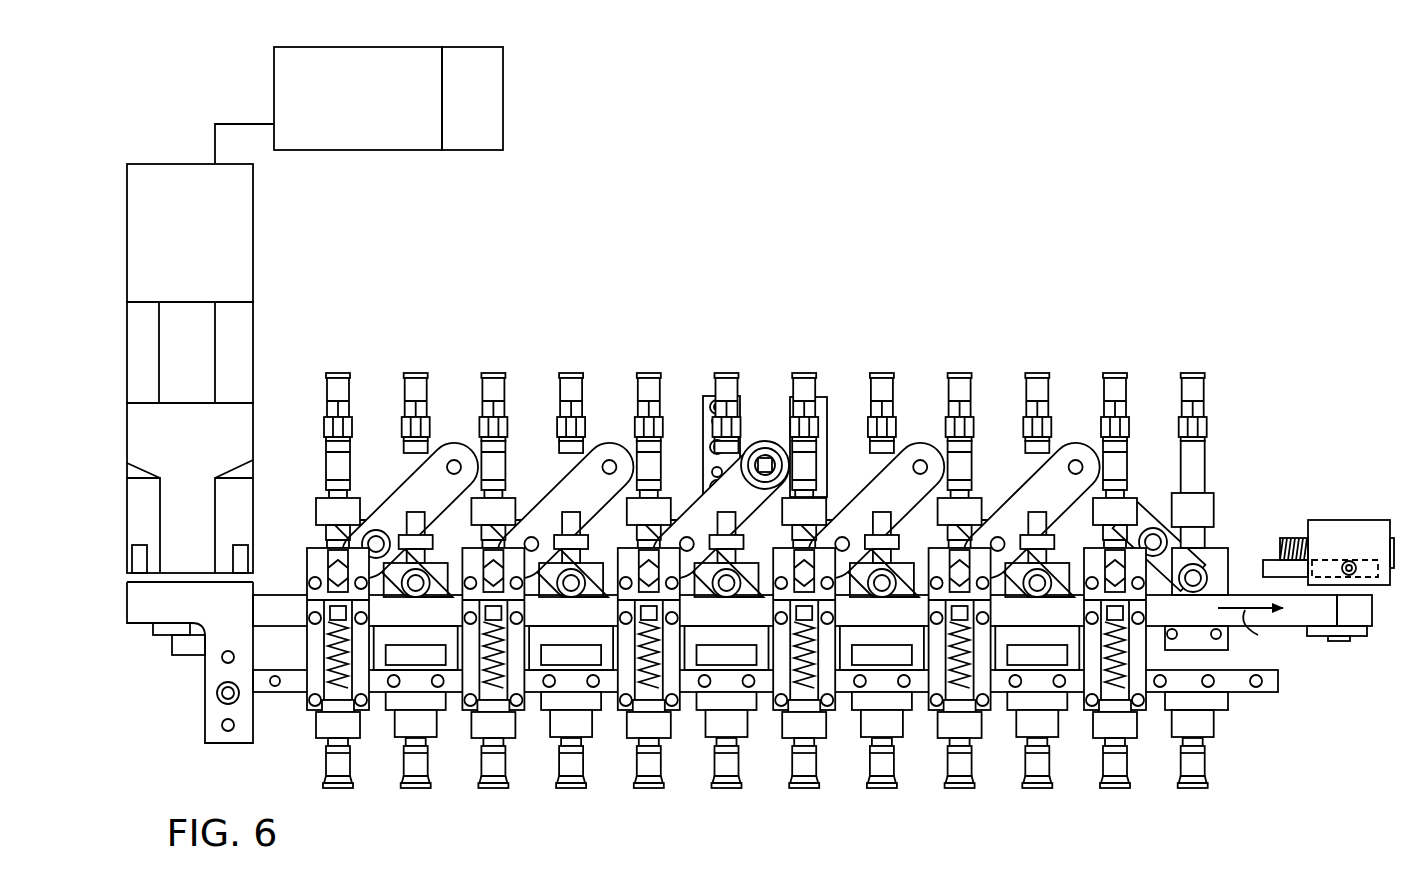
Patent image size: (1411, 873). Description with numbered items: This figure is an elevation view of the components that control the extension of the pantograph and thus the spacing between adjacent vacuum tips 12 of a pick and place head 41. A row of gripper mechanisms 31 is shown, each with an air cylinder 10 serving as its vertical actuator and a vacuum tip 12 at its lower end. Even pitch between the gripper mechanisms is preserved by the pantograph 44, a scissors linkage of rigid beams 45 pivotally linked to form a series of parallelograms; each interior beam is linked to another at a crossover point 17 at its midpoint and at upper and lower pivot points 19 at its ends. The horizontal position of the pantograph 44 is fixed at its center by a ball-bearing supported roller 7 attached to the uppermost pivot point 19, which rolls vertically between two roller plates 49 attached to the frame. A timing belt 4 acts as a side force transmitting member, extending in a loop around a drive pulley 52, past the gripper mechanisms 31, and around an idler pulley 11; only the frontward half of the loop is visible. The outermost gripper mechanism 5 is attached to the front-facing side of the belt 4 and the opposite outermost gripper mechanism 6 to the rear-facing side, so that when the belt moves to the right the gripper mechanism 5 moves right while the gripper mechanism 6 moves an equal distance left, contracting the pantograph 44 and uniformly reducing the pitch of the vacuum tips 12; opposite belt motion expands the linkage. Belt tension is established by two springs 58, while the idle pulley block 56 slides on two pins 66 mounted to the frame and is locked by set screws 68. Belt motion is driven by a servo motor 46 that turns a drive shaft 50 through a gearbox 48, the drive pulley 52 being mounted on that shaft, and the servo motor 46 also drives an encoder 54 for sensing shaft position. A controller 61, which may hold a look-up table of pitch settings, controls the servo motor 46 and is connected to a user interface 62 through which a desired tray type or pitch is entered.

The timing belt 4 is at (277, 614).
The outermost gripper mechanism 5 is at (306, 742).
The outermost gripper mechanism 6 is at (1224, 534).
The roller 7 is at (759, 455).
The air cylinder 10 is at (1126, 452).
The idler pulley 11 is at (1362, 628).
The vacuum tips 12 is at (728, 788).
The crossover point 17 is at (531, 536).
The pivot point 19 is at (610, 459).
The gripper mechanism 31 is at (704, 755).
The pick and place head 41 is at (694, 266).
The pantograph 44 is at (1067, 392).
The rigid beams 45 is at (1022, 498).
The servo motor 46 is at (193, 345).
The gearbox 48 is at (190, 517).
The roller plates 49 is at (735, 404).
The drive shaft 50 is at (187, 652).
The drive pulley 52 is at (160, 636).
The encoder 54 is at (230, 251).
The idle pulley block 56 is at (1342, 520).
The springs 58 is at (1294, 538).
The controller 61 is at (348, 128).
The user interface 62 is at (460, 130).
The pins 66 is at (1268, 560).
The set screws 68 is at (1353, 563).